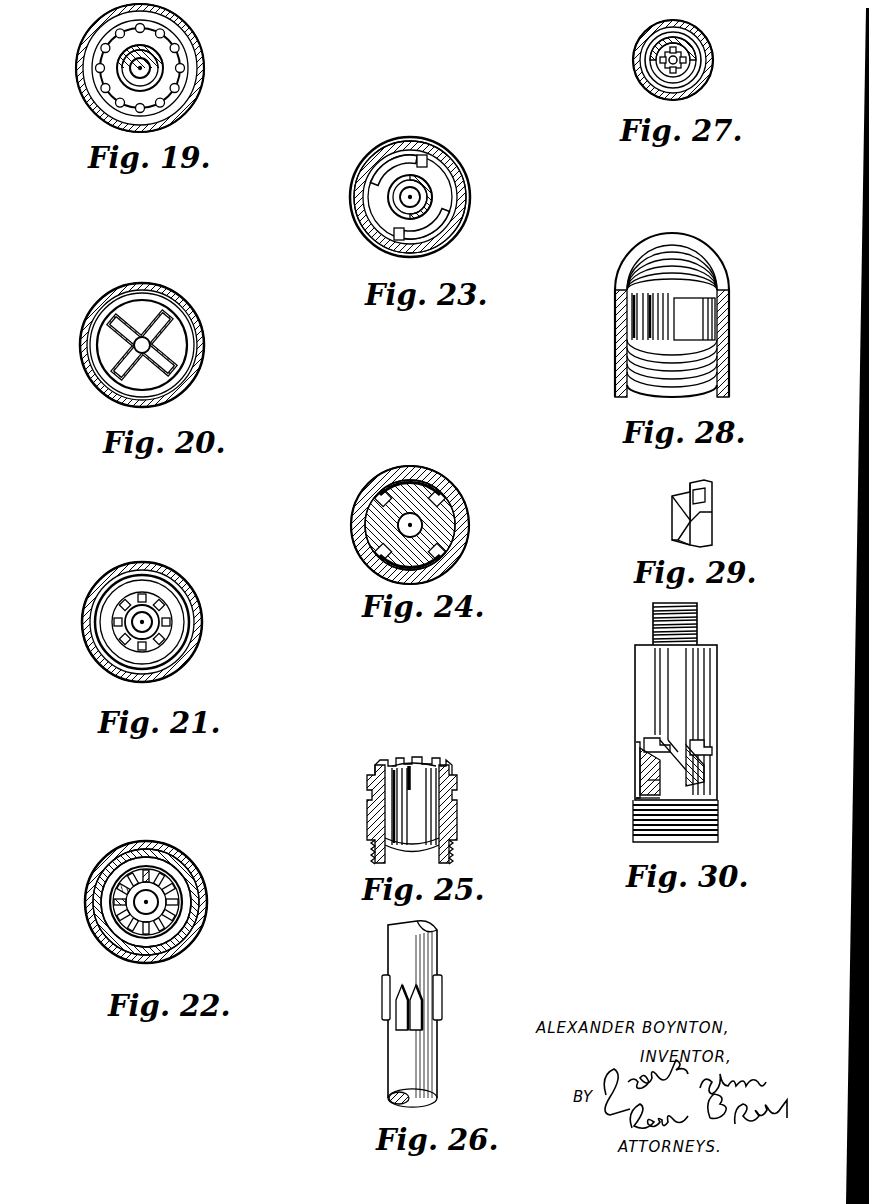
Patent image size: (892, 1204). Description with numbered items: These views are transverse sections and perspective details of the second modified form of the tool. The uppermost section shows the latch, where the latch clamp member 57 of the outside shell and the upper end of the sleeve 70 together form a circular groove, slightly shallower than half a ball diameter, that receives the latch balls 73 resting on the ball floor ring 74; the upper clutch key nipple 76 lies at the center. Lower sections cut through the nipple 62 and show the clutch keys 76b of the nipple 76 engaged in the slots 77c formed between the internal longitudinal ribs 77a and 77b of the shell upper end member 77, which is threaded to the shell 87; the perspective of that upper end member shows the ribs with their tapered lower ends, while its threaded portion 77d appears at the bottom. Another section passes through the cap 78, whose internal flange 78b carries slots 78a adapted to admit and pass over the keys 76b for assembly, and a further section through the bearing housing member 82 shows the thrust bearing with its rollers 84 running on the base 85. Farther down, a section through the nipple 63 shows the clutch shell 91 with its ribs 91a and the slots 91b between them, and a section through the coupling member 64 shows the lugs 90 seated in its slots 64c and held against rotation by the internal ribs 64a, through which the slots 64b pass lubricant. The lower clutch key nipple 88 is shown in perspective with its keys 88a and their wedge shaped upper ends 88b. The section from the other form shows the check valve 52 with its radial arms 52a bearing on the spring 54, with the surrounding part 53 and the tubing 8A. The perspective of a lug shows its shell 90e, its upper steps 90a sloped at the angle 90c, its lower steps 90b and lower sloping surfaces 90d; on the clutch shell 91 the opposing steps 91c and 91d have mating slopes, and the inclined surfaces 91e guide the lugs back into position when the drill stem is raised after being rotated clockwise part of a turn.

In FIG. 19, the latch clamp member 57 is at (188, 40).
In FIG. 19, the sleeve 70 is at (104, 42).
In FIG. 19, the ball floor ring 74 is at (108, 77).
In FIG. 19, the latch balls 73 is at (170, 89).
In FIG. 19, the upper clutch key nipple 76 is at (150, 78).
In FIG. 20, the upper clutch key nipple 76 is at (140, 361).
In FIG. 21, the upper clutch key nipple 76 is at (160, 613).
In FIG. 20, the nipple 62 is at (198, 309).
In FIG. 21, the nipple 62 is at (173, 582).
In FIG. 22, the nipple 62 is at (177, 856).
In FIG. 20, the keys 76b is at (123, 328).
In FIG. 20, the internal longitudinal rib 77a is at (168, 336).
In FIG. 25, the internal longitudinal rib 77a is at (392, 809).
In FIG. 20, the shell upper end member 77 is at (168, 372).
In FIG. 25, the shell upper end member 77 is at (450, 805).
In FIG. 21, the internal flange 78b is at (118, 612).
In FIG. 21, the slots 78a is at (125, 640).
In FIG. 21, the cap 78 is at (173, 637).
In FIG. 21, the shell 87 is at (183, 663).
In FIG. 22, the shell 87 is at (158, 945).
In FIG. 22, the rollers 84 is at (122, 887).
In FIG. 22, the bearing housing member 82 is at (178, 893).
In FIG. 22, the base 85 is at (118, 923).
In FIG. 23, the nipple 63 is at (430, 154).
In FIG. 23, the ribs 91a is at (378, 187).
In FIG. 30, the ribs 91a is at (684, 679).
In FIG. 23, the clutch shell 91 is at (425, 190).
In FIG. 24, the clutch shell 91 is at (368, 509).
In FIG. 30, the clutch shell 91 is at (712, 786).
In FIG. 23, the slots 91b is at (383, 218).
In FIG. 30, the slots 91b is at (704, 700).
In FIG. 23, the coupling member 64 is at (455, 217).
In FIG. 24, the coupling member 64 is at (443, 482).
In FIG. 28, the coupling member 64 is at (718, 282).
In FIG. 24, the lugs 90 is at (370, 549).
In FIG. 29, the lugs 90 is at (700, 533).
In FIG. 30, the lugs 90 is at (642, 759).
In FIG. 24, the slots 64b is at (452, 541).
In FIG. 28, the slots 64b is at (620, 273).
In FIG. 28, the internal ribs 64a is at (650, 311).
In FIG. 28, the slots 64c is at (694, 328).
In FIG. 25, the slots 77c is at (410, 783).
In FIG. 25, the internal longitudinal rib 77b is at (432, 827).
In FIG. 25, the threads 77d is at (392, 847).
In FIG. 26, the lower clutch key nipple 88 is at (430, 953).
In FIG. 26, the keys 88a is at (388, 1003).
In FIG. 26, the wedge shaped upper ends 88b is at (440, 985).
In FIG. 27, the check valve 52 is at (650, 32).
In FIG. 27, the tubing 8A is at (690, 36).
In FIG. 27, the spring 54 is at (656, 51).
In FIG. 27, the radial arms 52a is at (657, 69).
In FIG. 27, the ring 53 is at (707, 83).
In FIG. 29, the angle 90c is at (674, 493).
In FIG. 29, the shell 90e is at (706, 497).
In FIG. 29, the upper steps 90a is at (688, 512).
In FIG. 30, the upper steps 90a is at (642, 797).
In FIG. 29, the lower steps 90b is at (690, 527).
In FIG. 30, the lower steps 90b is at (645, 781).
In FIG. 29, the lower sloping surfaces 90d is at (688, 544).
In FIG. 30, the steps 91c is at (660, 722).
In FIG. 30, the steps 91d is at (670, 742).
In FIG. 30, the inclined surfaces 91e is at (704, 756).